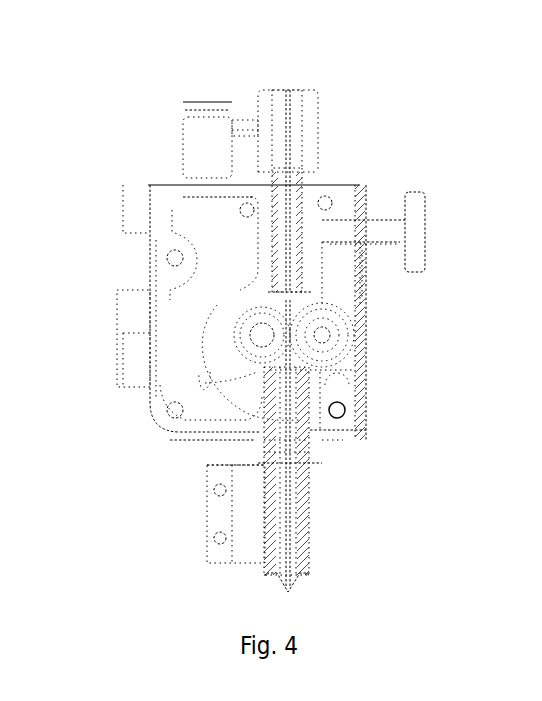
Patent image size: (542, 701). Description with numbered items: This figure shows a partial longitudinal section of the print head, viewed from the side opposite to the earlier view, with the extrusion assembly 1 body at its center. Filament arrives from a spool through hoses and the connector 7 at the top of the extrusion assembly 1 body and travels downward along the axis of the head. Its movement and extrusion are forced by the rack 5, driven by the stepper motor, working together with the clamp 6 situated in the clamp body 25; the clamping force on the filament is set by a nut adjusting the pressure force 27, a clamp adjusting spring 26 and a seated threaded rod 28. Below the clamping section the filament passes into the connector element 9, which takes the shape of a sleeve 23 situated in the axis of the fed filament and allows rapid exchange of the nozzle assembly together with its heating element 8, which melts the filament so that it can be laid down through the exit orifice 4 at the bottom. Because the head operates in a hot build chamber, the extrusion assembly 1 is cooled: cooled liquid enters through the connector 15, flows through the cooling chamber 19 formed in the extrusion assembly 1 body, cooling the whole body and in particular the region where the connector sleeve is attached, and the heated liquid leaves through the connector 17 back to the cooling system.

The extrusion assembly 1 is at (362, 181).
The exit orifice 4 is at (312, 578).
The rack 5 is at (230, 334).
The clamp 6 is at (356, 347).
The connector 7 is at (324, 125).
The heating element 8 is at (204, 513).
The connector element 9 is at (325, 446).
The connector 15 is at (244, 117).
The connector 17 is at (203, 101).
The cooling chamber 19 is at (198, 227).
The sleeve 23 is at (302, 462).
The clamp body 25 is at (388, 248).
The clamp adjusting spring 26 is at (380, 207).
The nut adjusting the pressure force 27 is at (428, 206).
The seated threaded rod 28 is at (369, 289).